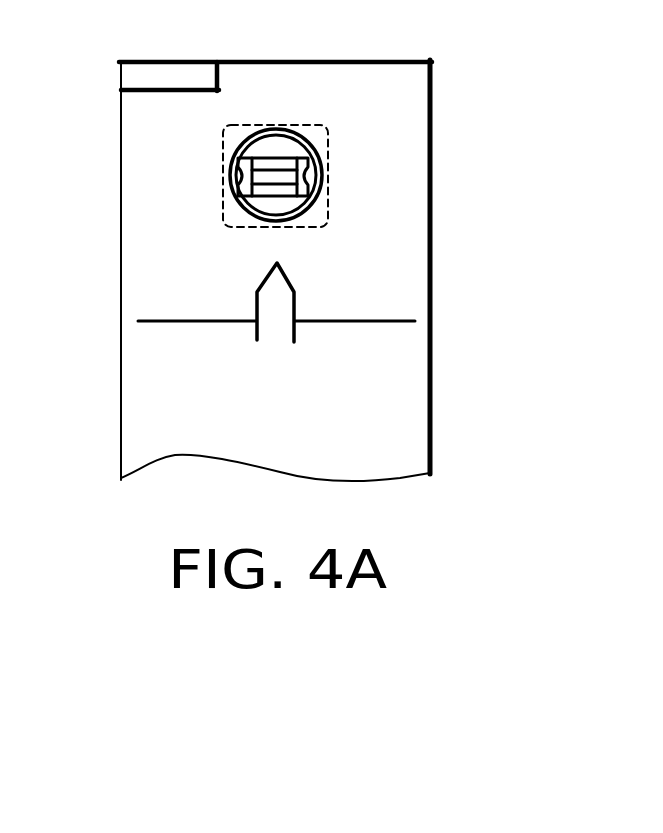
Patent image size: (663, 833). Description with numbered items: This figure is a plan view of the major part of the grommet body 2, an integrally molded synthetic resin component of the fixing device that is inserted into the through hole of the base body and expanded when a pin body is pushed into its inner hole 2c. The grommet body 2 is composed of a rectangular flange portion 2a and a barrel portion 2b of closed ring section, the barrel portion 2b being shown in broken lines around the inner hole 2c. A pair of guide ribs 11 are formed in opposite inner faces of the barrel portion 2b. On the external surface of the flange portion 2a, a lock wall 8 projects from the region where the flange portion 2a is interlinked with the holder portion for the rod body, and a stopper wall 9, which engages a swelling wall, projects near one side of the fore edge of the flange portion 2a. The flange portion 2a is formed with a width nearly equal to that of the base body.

The grommet body 2 is at (447, 103).
The flange portion 2a is at (395, 265).
The barrel portion 2b is at (222, 217).
The inner hole 2c is at (275, 166).
The lock wall 8 is at (278, 298).
The stopper wall 9 is at (162, 78).
The guide ribs 11 is at (241, 177).